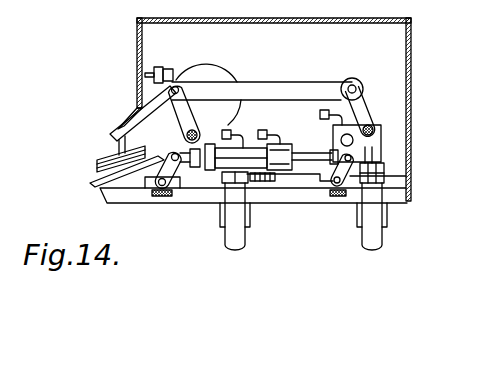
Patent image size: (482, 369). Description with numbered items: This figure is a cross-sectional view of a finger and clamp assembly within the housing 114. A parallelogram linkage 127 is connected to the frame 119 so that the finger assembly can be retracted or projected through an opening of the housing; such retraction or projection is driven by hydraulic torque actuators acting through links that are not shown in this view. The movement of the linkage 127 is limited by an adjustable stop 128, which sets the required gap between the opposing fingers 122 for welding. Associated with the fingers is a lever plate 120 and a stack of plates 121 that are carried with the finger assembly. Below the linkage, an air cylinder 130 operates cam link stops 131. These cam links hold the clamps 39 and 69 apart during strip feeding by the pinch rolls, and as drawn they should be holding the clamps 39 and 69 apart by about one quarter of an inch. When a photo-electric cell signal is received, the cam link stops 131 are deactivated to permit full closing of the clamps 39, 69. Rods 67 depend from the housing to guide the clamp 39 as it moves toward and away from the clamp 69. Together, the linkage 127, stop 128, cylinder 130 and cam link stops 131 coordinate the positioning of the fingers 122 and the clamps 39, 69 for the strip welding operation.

The housing 114 is at (419, 33).
The adjustable stop 128 is at (157, 66).
The frame 119 is at (209, 57).
The parallelogram linkage 127 is at (300, 82).
The lever plate 120 is at (117, 143).
The plate stack 121 is at (97, 160).
The opposing fingers 122 is at (97, 181).
The clamp 39 is at (110, 200).
The clamp 69 is at (205, 188).
The cam link stops 131 is at (146, 197).
The air cylinder 130 is at (270, 180).
The rods 67 is at (227, 218).